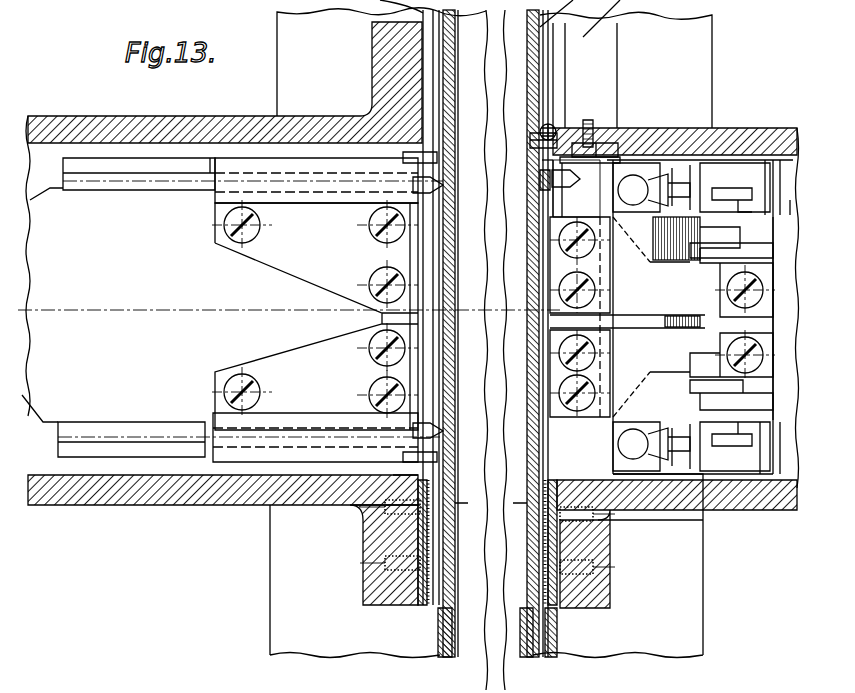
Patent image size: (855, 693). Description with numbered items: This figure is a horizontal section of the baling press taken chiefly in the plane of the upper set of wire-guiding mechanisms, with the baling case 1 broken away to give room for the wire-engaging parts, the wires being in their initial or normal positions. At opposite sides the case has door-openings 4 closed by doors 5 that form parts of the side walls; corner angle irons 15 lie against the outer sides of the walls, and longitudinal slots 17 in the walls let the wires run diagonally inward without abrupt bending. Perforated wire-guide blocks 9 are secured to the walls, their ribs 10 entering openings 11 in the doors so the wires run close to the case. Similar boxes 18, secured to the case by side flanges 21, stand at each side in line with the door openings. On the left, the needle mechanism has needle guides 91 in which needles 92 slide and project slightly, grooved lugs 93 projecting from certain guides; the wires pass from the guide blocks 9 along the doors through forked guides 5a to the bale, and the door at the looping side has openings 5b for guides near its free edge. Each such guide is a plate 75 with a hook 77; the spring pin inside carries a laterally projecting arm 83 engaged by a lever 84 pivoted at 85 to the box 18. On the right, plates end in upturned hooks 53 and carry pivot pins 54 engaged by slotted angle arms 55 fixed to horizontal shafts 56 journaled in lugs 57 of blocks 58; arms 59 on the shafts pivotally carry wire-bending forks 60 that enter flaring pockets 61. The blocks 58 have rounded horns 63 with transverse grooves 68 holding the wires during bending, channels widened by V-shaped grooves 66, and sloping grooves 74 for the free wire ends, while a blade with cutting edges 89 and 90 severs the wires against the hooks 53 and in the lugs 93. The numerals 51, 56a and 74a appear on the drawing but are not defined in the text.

The baling case 1 is at (527, 268).
The door-openings 4 is at (545, 86).
The doors 5 is at (452, 296).
The forked guides 5a is at (671, 100).
The openings 5b is at (526, 213).
The wire-guide blocks 9 is at (427, 593).
The ribs 10 is at (447, 566).
The openings 11 is at (448, 476).
The corner angle irons 15 is at (680, 618).
The longitudinal slots 17 is at (381, 62).
The boxes 18 is at (214, 130).
The side flanges 21 is at (367, 572).
The housing wall 51 is at (768, 230).
The hooks 53 is at (555, 270).
The pivot pins 54 is at (705, 280).
The angle arms 55 is at (703, 250).
The horizontal shafts 56 is at (705, 480).
The cavity wall 56a is at (790, 198).
The lugs 57 is at (646, 348).
The blocks 58 is at (780, 185).
The arms 59 is at (783, 203).
The wire-bending forks 60 is at (672, 183).
The flaring pockets 61 is at (695, 167).
The horns 63 is at (613, 193).
The V-shaped grooves 66 is at (633, 317).
The transverse grooves 68 is at (628, 317).
The sloping grooves 74 is at (762, 465).
The wall 74a is at (743, 602).
The plate 75 is at (538, 140).
The hook 77 is at (583, 143).
The laterally projecting arms 83 is at (553, 106).
The levers 84 is at (697, 131).
The pivot 85 is at (620, 152).
The cutting edges 89 is at (627, 312).
The cutting edges 90 is at (540, 324).
The needle guides 91 is at (315, 315).
The needles 92 is at (445, 187).
The grooved lugs 93 is at (368, 303).